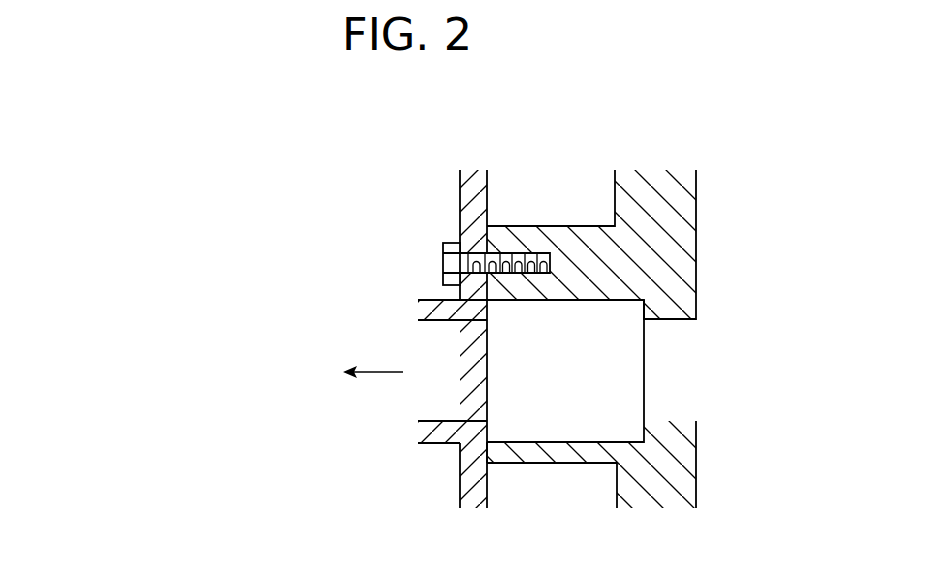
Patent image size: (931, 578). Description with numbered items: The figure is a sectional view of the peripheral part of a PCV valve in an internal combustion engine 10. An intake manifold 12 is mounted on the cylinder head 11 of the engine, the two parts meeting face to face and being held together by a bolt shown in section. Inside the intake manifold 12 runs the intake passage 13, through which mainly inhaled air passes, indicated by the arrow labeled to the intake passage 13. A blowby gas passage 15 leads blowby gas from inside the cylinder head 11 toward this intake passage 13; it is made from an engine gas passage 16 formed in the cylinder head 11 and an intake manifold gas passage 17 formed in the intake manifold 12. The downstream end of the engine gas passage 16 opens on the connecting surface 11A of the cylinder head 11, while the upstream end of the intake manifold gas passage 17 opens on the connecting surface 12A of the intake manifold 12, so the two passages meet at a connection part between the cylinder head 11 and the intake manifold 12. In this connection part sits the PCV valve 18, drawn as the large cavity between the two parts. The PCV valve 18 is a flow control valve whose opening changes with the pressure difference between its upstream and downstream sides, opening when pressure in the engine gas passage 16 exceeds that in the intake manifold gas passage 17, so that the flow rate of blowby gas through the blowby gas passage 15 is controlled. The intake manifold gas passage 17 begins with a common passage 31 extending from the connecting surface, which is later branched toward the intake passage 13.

The internal combustion engine 10 is at (591, 315).
The cylinder head 11 is at (613, 180).
The connecting surface 11A is at (483, 293).
The intake manifold 12 is at (488, 180).
The connecting surface 12A is at (490, 448).
The intake passage 13 is at (238, 370).
The blowby gas passage 15 is at (524, 371).
The engine gas passage 16 is at (673, 321).
The intake manifold gas passage 17 is at (437, 421).
The PCV valve 18 is at (645, 378).
The common passage 31 is at (379, 371).